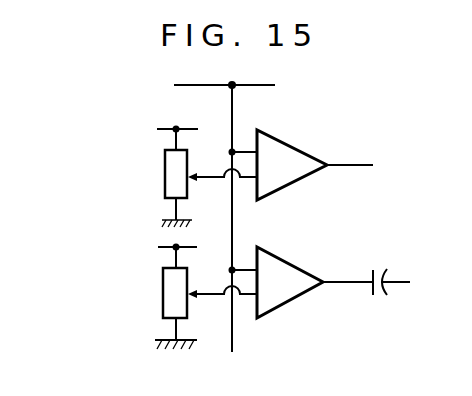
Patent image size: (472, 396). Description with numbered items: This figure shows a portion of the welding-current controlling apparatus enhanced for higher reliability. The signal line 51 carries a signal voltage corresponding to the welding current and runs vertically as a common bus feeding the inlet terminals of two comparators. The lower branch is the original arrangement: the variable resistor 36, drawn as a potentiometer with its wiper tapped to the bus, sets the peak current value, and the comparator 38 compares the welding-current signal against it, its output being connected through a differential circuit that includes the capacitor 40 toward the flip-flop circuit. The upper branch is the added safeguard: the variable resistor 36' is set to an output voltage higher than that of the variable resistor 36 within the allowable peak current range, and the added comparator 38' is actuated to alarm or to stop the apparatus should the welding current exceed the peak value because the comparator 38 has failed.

The signal line 51 is at (191, 86).
The variable resistor 36' is at (186, 177).
The comparator 38' is at (301, 155).
The variable resistor 36 is at (186, 297).
The comparator 38 is at (301, 278).
The capacitor 40 is at (377, 269).